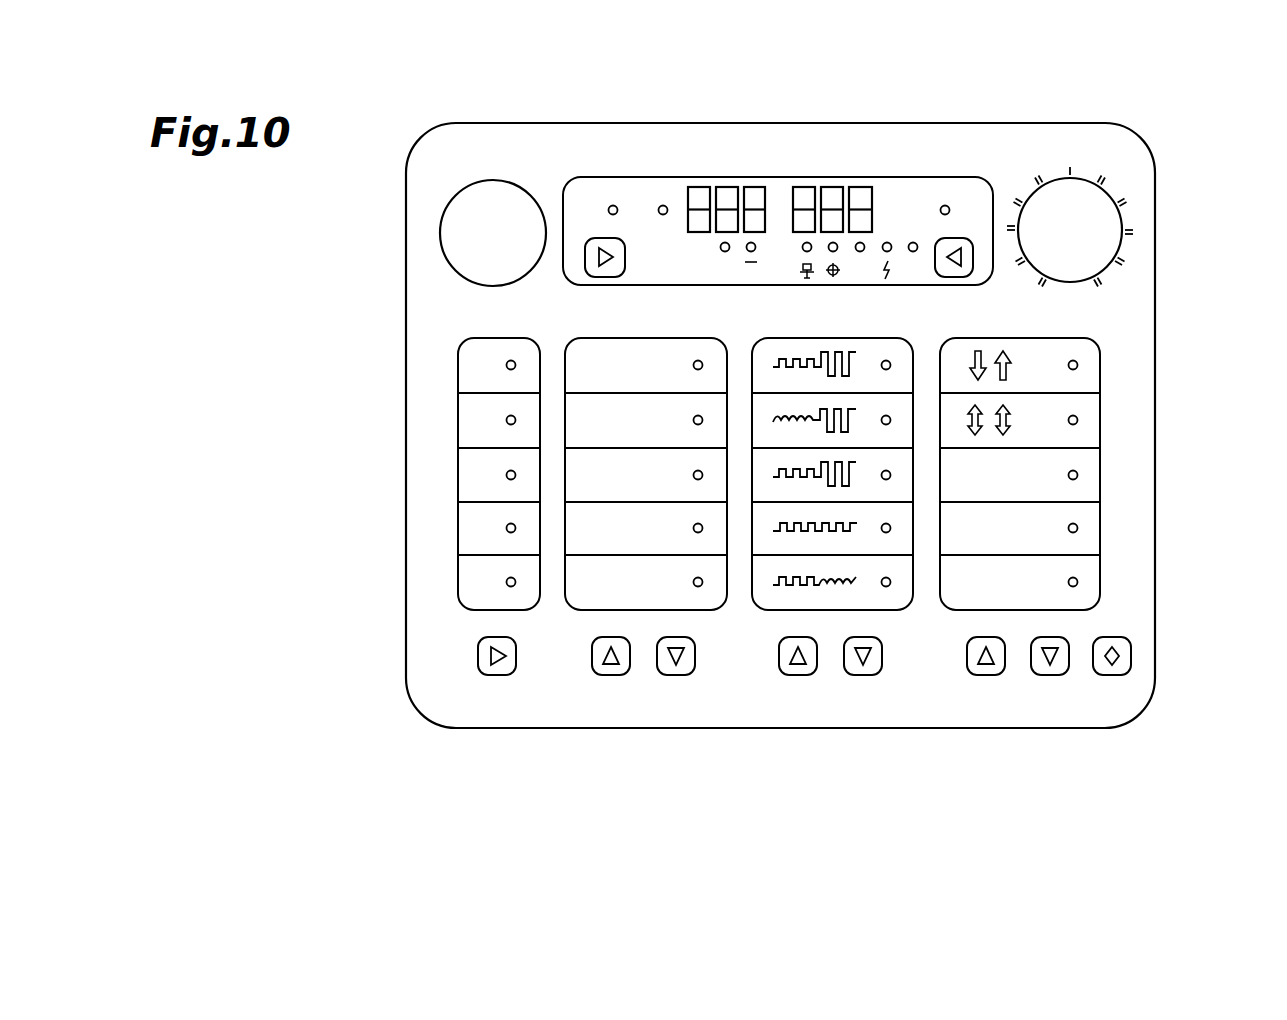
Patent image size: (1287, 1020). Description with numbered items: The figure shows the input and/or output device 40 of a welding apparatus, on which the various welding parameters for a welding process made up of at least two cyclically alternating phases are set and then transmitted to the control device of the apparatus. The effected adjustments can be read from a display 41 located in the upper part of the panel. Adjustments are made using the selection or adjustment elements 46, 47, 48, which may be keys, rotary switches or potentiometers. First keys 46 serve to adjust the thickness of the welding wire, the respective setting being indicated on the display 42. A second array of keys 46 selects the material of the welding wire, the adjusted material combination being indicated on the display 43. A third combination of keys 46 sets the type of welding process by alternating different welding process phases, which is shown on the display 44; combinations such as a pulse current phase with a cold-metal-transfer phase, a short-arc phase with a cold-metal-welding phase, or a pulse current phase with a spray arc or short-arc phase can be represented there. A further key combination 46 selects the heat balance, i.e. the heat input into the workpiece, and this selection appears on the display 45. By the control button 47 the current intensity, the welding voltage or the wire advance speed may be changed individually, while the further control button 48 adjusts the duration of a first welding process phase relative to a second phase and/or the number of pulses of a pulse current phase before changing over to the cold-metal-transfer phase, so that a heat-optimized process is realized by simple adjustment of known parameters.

The input and/or output device 40 is at (277, 413).
The display 41 is at (648, 188).
The display 42 is at (440, 518).
The display 43 is at (577, 627).
The display 44 is at (892, 625).
The display 45 is at (1115, 520).
The selection or adjustment elements 46 is at (462, 692).
The control button 47 is at (480, 234).
The control button 48 is at (1072, 227).